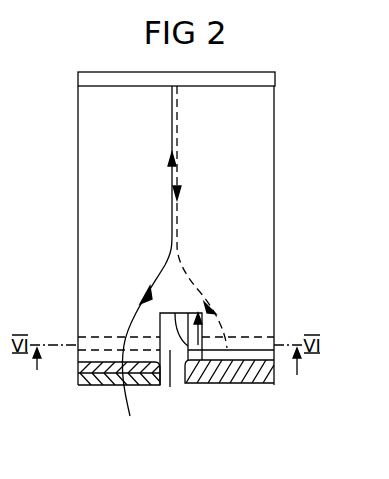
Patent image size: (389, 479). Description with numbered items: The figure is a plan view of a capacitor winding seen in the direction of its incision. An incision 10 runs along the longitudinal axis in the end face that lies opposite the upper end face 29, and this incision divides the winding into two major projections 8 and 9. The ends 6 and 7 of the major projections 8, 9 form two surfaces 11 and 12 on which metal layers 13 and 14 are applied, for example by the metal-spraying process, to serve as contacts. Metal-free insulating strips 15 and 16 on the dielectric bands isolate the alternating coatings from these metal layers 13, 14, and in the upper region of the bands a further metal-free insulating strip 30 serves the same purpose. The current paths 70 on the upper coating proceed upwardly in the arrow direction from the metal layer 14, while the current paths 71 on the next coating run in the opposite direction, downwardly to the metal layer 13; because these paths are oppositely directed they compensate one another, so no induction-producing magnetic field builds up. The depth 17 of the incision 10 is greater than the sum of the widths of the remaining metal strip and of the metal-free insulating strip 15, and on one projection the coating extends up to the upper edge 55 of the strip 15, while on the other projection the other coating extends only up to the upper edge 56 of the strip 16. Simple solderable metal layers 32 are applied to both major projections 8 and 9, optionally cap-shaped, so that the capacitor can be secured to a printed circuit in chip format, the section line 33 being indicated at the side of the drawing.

The upper end face 29 is at (91, 72).
The metal-free insulating strip 30 is at (82, 79).
The current paths 70 is at (165, 274).
The return flow path 71 is at (190, 278).
The upper edge of metal-free insulating strip 56 is at (115, 336).
The metal-free insulating strip 16 is at (97, 338).
The depth of the incision 17 is at (178, 313).
The metal-free insulating strip 15 is at (250, 340).
The upper edge of metal-free insulating strip 55 is at (234, 338).
The end of major projection 7 is at (84, 357).
The solderable metal layers 32 is at (83, 388).
The surface 12 is at (100, 376).
The metal layer 14 is at (130, 416).
The incision 10 is at (176, 355).
The major projection 9 is at (163, 380).
The major projection 8 is at (186, 372).
The end of major projection 6 is at (250, 383).
The metal layer 13 is at (212, 386).
The surface 11 is at (228, 382).
The bottom corner 33 is at (276, 376).